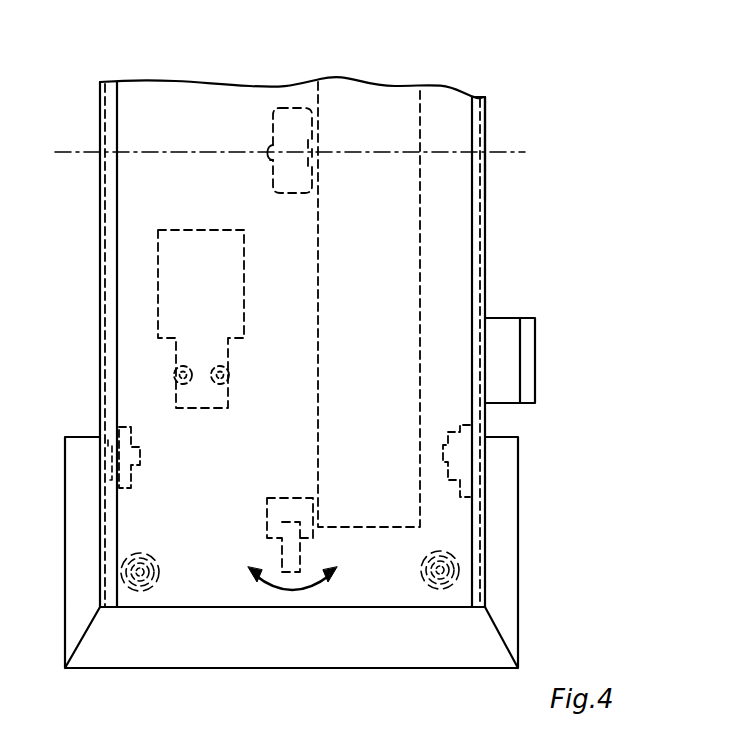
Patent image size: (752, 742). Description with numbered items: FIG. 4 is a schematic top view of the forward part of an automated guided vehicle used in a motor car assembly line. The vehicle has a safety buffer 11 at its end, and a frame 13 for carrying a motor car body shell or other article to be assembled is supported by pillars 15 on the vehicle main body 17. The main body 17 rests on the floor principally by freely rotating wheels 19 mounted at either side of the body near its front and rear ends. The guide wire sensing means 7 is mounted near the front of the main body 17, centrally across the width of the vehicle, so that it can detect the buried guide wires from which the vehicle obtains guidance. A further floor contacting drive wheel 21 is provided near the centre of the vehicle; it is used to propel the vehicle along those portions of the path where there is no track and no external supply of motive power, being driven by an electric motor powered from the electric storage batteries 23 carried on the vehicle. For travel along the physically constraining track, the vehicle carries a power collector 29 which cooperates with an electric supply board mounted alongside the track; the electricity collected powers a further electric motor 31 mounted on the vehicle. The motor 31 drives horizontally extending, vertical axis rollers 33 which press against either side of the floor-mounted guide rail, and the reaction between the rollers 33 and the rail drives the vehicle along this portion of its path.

The wire-detecting sensor means 7 is at (285, 556).
The safety buffer 11 is at (510, 577).
The frame 13 is at (478, 117).
The pillar 15 is at (447, 585).
The vehicle main body 17 is at (487, 143).
The freely rotating wheel 19 is at (122, 462).
The drive wheel 21 is at (272, 138).
The electric storage batteries 23 is at (383, 295).
The power collector 29 is at (508, 318).
The electric motor 31 is at (158, 238).
The rollers 33 is at (174, 376).